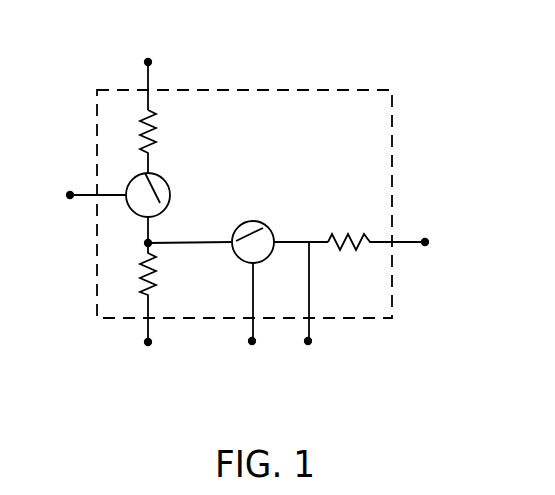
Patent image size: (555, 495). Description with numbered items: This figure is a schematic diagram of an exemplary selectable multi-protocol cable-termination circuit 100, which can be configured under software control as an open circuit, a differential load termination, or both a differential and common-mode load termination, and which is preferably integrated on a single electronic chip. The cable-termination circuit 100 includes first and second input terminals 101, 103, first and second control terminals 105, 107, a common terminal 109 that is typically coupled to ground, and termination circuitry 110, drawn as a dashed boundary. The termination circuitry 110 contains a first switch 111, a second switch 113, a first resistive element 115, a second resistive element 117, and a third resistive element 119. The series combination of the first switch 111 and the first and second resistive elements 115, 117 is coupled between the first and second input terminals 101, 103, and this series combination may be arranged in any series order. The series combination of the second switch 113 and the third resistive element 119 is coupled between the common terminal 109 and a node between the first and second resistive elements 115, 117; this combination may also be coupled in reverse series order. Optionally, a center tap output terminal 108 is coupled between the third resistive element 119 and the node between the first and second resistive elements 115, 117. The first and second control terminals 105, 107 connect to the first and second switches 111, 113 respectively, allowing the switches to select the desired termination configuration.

The cable-termination circuit 100 is at (453, 86).
The first input terminal 101 is at (148, 62).
The second input terminal 103 is at (148, 342).
The first control terminal 105 is at (70, 195).
The second control terminal 107 is at (252, 341).
The center tap output terminal 108 is at (308, 341).
The common terminal 109 is at (425, 242).
The termination circuitry 110 is at (392, 162).
The first switch 111 is at (170, 197).
The second switch 113 is at (262, 222).
The first resistive element 115 is at (155, 128).
The second resistive element 117 is at (155, 278).
The third resistive element 119 is at (338, 232).